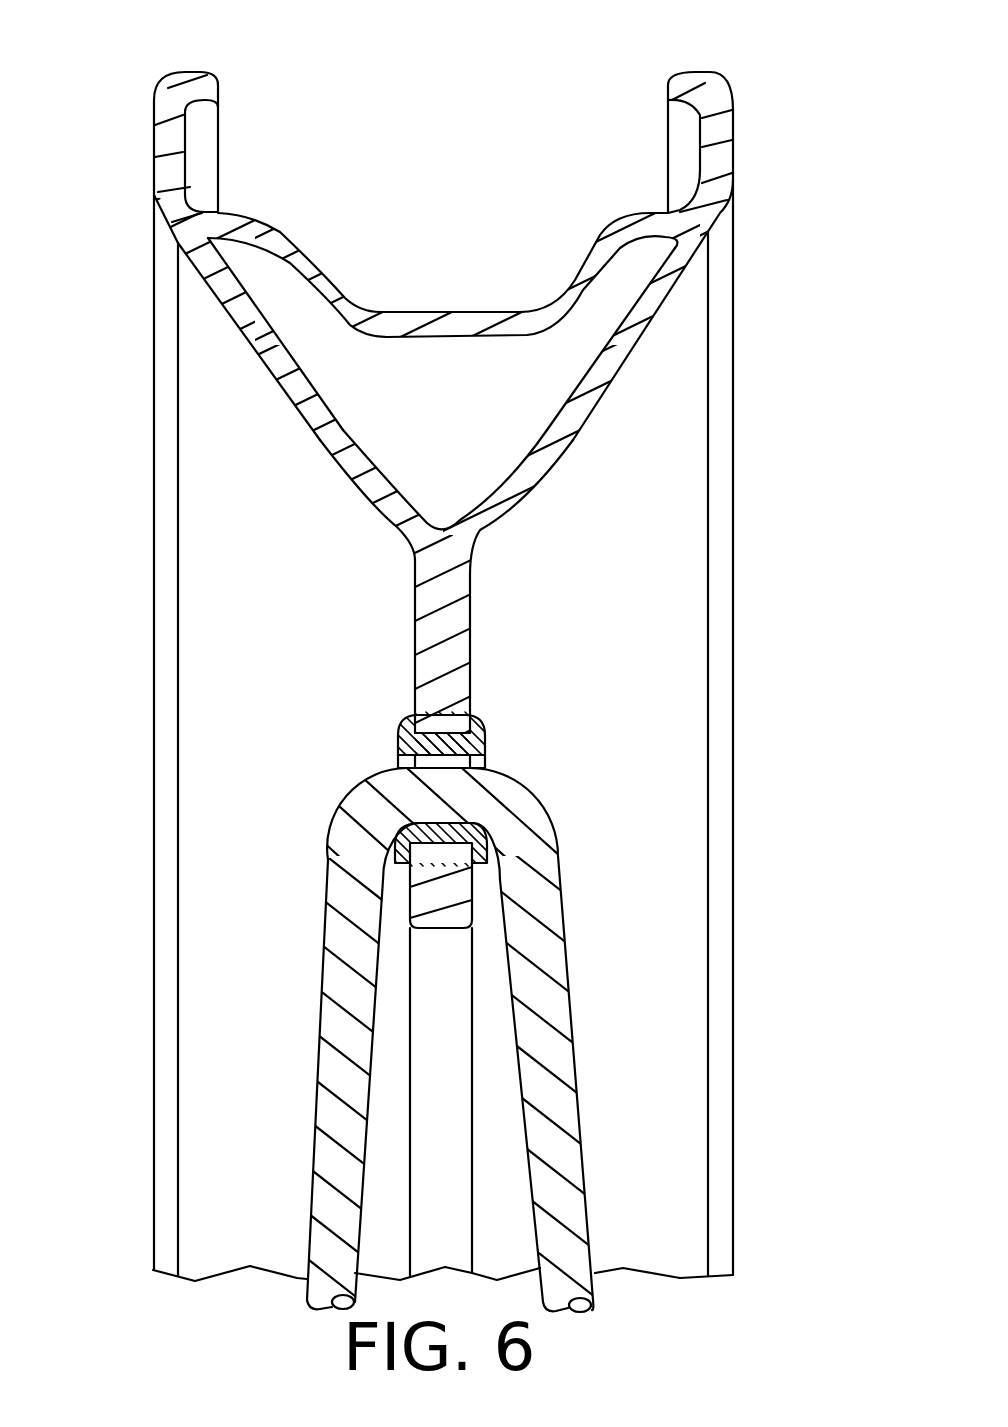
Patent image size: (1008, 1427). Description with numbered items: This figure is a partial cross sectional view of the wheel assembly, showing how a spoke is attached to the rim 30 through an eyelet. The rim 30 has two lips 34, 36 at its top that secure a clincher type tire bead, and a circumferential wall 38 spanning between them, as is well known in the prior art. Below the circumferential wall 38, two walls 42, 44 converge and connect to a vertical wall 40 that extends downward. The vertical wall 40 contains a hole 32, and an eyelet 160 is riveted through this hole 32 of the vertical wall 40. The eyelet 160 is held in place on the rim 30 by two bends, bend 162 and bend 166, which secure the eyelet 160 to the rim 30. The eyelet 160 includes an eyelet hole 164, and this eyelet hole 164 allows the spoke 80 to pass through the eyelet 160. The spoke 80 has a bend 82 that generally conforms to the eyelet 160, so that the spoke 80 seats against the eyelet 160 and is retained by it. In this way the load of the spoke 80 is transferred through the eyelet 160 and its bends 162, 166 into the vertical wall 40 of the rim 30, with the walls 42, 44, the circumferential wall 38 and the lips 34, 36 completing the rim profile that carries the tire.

The rim 30 is at (598, 402).
The hole 32 is at (415, 730).
The lip 34 is at (217, 78).
The lip 36 is at (672, 78).
The circumferential wall 38 is at (400, 310).
The vertical wall 40 is at (470, 650).
The wall 42 is at (288, 388).
The wall 44 is at (645, 323).
The spoke 80 is at (577, 1117).
The bend 82 is at (355, 797).
The eyelet 160 is at (467, 755).
The bend 162 is at (485, 723).
The eyelet hole 164 is at (422, 762).
The bend 166 is at (407, 717).